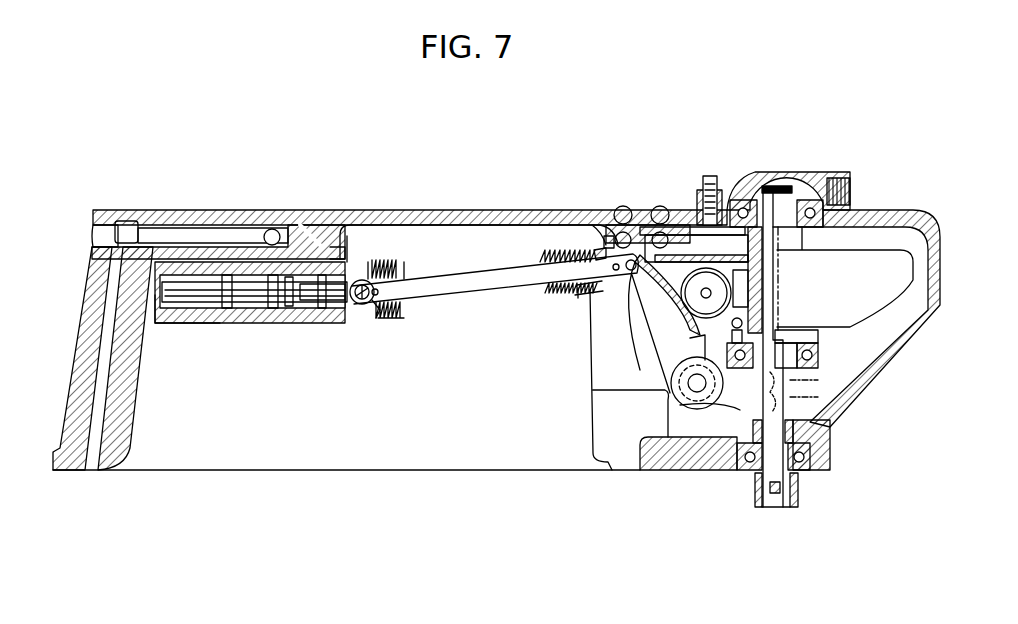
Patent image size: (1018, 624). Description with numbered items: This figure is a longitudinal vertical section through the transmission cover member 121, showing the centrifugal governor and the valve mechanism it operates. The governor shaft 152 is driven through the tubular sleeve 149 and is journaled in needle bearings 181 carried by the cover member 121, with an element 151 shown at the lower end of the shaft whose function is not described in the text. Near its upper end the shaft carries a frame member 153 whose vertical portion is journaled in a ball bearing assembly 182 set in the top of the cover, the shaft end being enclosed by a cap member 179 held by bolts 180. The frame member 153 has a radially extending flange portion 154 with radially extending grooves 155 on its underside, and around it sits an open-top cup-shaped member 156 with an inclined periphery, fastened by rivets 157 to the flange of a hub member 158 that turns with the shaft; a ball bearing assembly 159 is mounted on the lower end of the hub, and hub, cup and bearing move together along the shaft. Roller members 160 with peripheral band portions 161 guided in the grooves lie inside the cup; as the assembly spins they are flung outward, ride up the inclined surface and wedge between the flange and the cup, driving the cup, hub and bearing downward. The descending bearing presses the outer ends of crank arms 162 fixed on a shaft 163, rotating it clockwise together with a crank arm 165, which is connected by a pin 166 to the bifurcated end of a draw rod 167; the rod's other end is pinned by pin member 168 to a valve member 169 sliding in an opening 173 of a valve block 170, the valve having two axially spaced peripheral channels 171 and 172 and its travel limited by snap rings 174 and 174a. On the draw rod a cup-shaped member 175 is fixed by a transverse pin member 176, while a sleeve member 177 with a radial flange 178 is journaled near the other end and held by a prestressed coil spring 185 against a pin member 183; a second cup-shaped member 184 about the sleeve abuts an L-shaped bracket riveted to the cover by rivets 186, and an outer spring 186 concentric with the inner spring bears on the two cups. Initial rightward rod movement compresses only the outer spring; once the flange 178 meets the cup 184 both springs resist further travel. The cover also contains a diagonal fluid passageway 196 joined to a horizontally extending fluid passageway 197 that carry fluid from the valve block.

The cover member 121 is at (458, 210).
The tubular sleeve 149 is at (799, 500).
The set screw 151 is at (775, 495).
The shaft 152 is at (790, 463).
The frame member 153 is at (768, 186).
The radially extending flange portion 154 is at (697, 252).
The radially extending grooves 155 is at (683, 227).
The cup-shaped member 156 is at (892, 287).
The rivets 157 is at (745, 325).
The hub member 158 is at (755, 345).
The ball bearing assembly 159 is at (822, 350).
The roller members 160 is at (665, 345).
The peripheral band portions 161 is at (726, 292).
The crank arms 162 is at (724, 383).
The shaft 163 is at (680, 393).
The crank arm 165 is at (690, 325).
The pin 166 is at (628, 272).
The draw rod 167 is at (475, 290).
The pin member 168 is at (358, 305).
The valve member 169 is at (310, 310).
The valve block 170 is at (250, 323).
The peripheral channel 171 is at (243, 280).
The peripheral channel 172 is at (333, 257).
The opening 173 is at (190, 323).
The snap ring 174 is at (162, 284).
The snap ring 174a is at (352, 262).
The cup-shaped member 175 is at (392, 322).
The transverse pin member 176 is at (380, 320).
The sleeve member 177 is at (585, 296).
The radial flange 178 is at (556, 297).
The cap member 179 is at (810, 172).
The bolts 180 is at (710, 176).
The needle bearings 181 is at (820, 436).
The ball bearing assembly 182 is at (845, 192).
The pin member 183 is at (606, 236).
The cup-shaped member 184 is at (597, 250).
The prestressed coil spring 185 is at (540, 257).
The second spring 186 is at (398, 262).
The diagonal fluid passageway 196 is at (292, 216).
The horizontally extending fluid passageway 197 is at (166, 228).